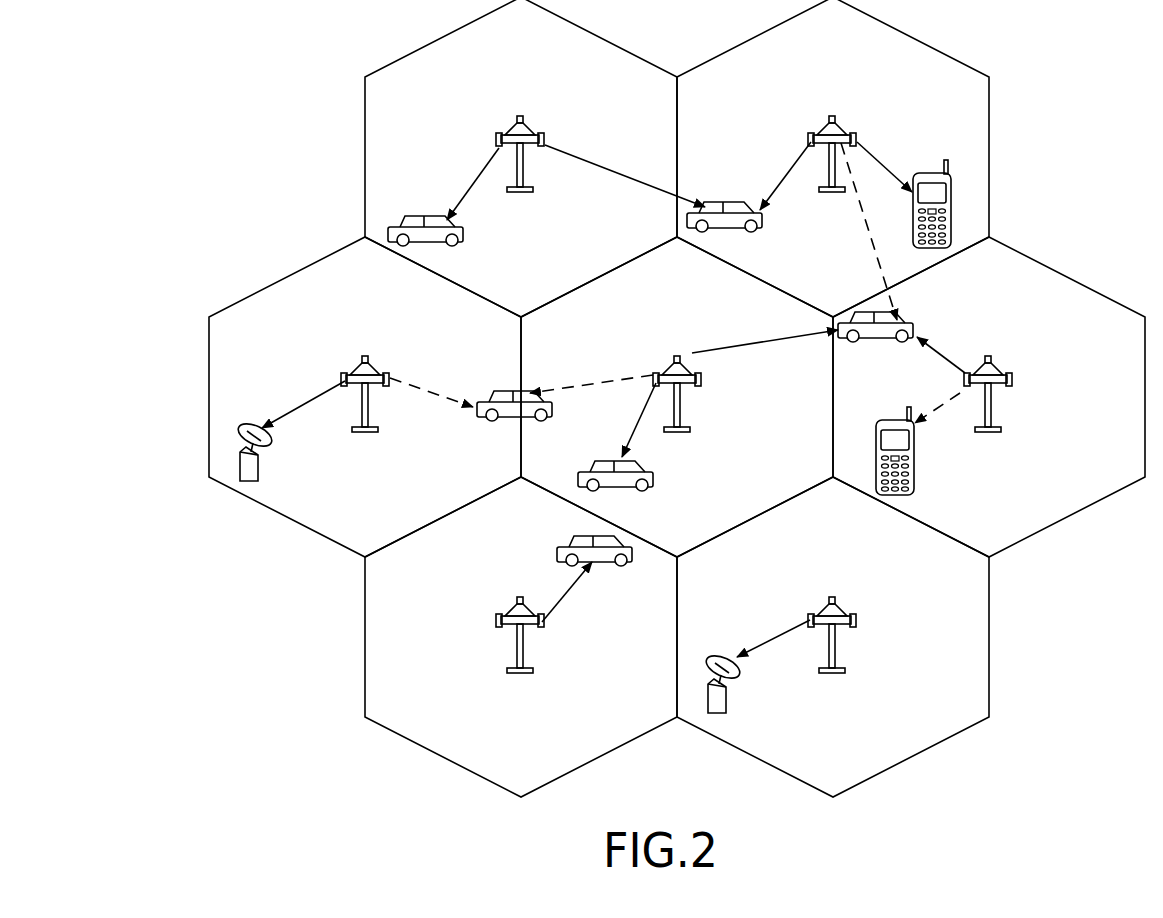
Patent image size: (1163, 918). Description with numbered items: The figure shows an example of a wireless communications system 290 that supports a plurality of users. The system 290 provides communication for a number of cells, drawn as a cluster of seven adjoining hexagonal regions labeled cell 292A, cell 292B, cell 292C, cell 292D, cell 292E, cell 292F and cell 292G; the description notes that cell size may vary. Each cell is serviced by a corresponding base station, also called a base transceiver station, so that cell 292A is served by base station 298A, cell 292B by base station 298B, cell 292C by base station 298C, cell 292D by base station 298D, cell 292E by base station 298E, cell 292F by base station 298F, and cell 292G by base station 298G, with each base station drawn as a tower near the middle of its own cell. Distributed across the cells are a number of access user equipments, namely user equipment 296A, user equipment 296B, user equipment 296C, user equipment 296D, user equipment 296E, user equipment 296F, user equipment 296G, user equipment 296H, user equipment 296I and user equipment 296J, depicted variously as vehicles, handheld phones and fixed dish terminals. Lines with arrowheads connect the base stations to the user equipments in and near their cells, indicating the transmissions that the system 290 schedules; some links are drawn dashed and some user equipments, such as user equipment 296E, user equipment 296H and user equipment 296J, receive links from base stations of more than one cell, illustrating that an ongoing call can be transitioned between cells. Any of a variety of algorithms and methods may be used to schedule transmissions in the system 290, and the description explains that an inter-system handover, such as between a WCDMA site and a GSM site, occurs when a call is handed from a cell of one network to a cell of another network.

The wireless communications system 290 is at (136, 84).
The cell 292A is at (543, 40).
The cell 292B is at (855, 40).
The cell 292C is at (389, 291).
The cell 292D is at (699, 291).
The cell 292E is at (1011, 291).
The cell 292F is at (544, 532).
The cell 292G is at (856, 532).
The base station 298A is at (521, 116).
The base station 298B is at (833, 116).
The base station 298C is at (366, 356).
The base station 298D is at (678, 356).
The base station 298E is at (988, 356).
The base station 298F is at (521, 597).
The base station 298G is at (833, 597).
The user equipment 296A is at (464, 236).
The user equipment 296B is at (929, 173).
The user equipment 296C is at (259, 470).
The user equipment 296D is at (654, 481).
The user equipment 296E is at (877, 340).
The user equipment 296F is at (632, 564).
The user equipment 296G is at (727, 704).
The user equipment 296H is at (483, 419).
The user equipment 296I is at (915, 480).
The user equipment 296J is at (727, 203).